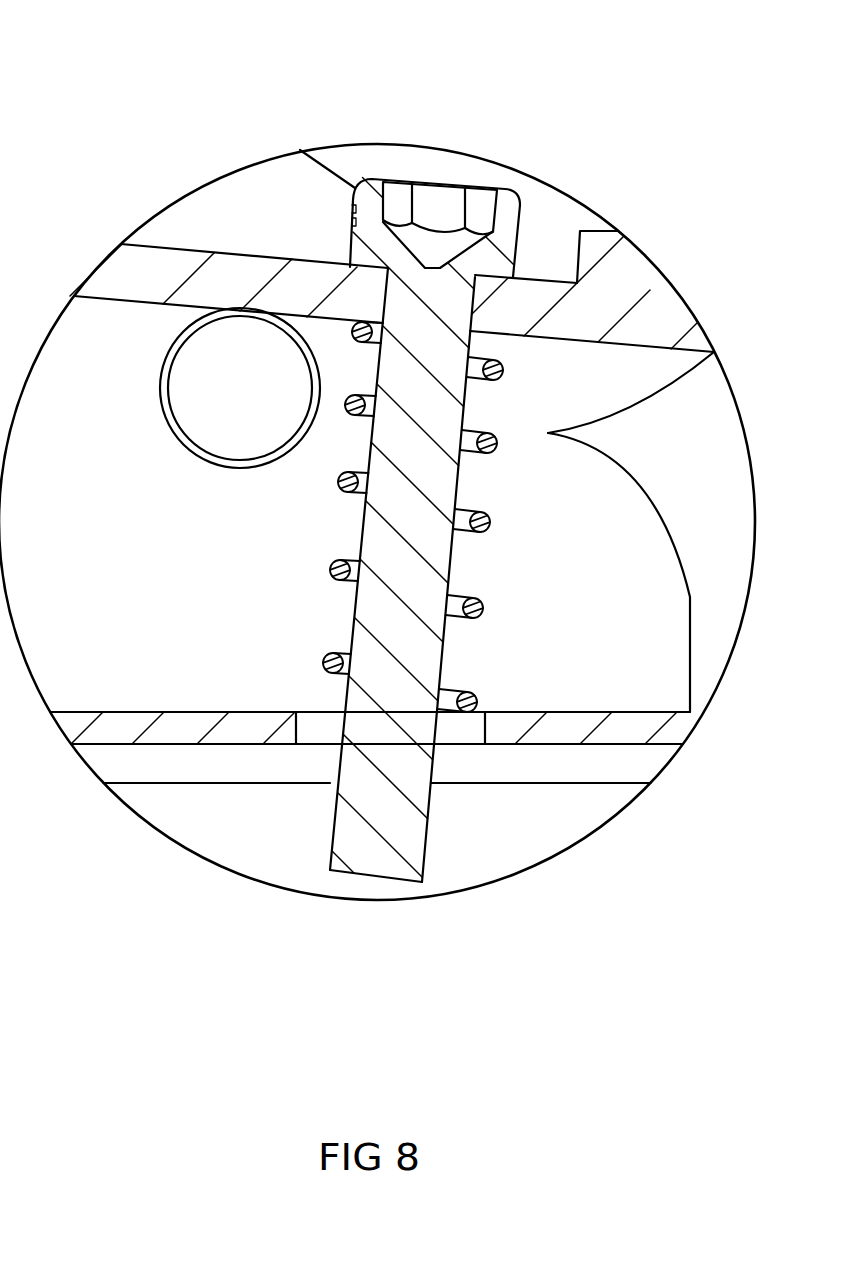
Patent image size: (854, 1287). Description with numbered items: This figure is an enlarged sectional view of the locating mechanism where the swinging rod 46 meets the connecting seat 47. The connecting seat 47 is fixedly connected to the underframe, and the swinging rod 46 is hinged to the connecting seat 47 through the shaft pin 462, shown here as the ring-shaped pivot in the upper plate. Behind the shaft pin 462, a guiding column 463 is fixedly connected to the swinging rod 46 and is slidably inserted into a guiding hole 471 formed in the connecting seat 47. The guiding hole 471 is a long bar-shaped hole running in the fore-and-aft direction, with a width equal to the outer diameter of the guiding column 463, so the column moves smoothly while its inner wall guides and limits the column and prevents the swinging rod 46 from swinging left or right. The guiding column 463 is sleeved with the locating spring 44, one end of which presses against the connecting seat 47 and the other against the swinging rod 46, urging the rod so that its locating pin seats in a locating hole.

The locating spring 44 is at (478, 612).
The swinging rod 46 is at (231, 283).
The shaft pin 462 is at (238, 382).
The guiding column 463 is at (397, 643).
The connecting seat 47 is at (165, 730).
The guiding hole 471 is at (463, 733).